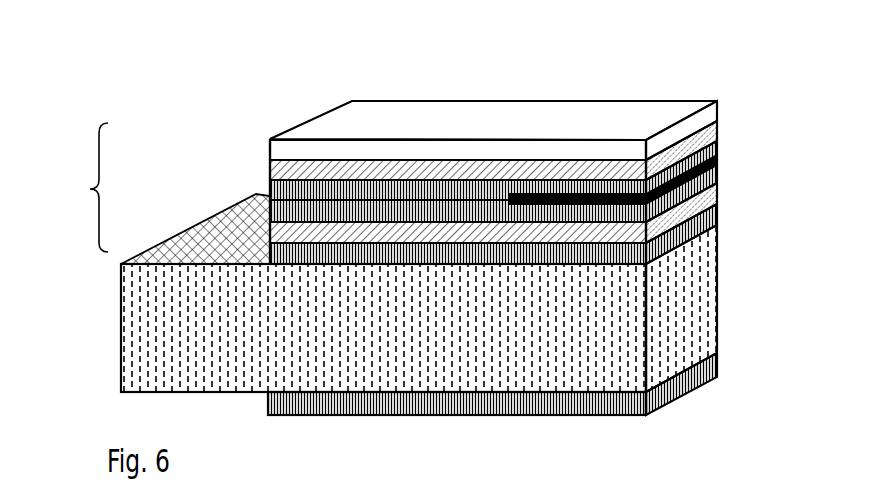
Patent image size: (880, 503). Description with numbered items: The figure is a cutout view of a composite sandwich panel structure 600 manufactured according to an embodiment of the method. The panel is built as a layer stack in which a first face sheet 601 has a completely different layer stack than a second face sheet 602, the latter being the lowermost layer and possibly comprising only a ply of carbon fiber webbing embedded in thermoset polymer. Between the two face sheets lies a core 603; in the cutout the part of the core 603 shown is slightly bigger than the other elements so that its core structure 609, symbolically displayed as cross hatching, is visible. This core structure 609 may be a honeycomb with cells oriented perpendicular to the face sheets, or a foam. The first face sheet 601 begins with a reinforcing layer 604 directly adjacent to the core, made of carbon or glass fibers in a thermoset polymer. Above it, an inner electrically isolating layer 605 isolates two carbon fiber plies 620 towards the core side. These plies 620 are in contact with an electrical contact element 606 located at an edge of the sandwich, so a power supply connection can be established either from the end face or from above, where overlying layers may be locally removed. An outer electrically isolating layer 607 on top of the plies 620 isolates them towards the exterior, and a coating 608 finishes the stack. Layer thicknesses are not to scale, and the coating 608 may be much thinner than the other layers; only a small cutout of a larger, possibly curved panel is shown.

The composite sandwich panel structure 600 is at (489, 72).
The first face sheet 601 is at (89, 189).
The second face sheet 602 is at (719, 365).
The core 603 is at (719, 300).
The reinforcing layer 604 is at (719, 217).
The inner electrically isolating layer 605 is at (719, 192).
The electrical contact element 606 is at (719, 162).
The outer electrically isolating layer 607 is at (719, 132).
The coating 608 is at (719, 105).
The core structure 609 is at (193, 229).
The plies 620 is at (265, 207).